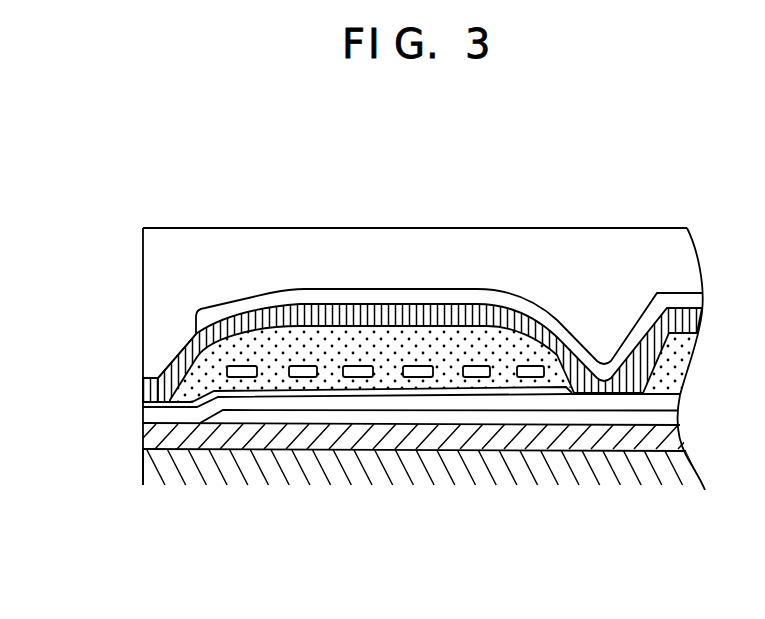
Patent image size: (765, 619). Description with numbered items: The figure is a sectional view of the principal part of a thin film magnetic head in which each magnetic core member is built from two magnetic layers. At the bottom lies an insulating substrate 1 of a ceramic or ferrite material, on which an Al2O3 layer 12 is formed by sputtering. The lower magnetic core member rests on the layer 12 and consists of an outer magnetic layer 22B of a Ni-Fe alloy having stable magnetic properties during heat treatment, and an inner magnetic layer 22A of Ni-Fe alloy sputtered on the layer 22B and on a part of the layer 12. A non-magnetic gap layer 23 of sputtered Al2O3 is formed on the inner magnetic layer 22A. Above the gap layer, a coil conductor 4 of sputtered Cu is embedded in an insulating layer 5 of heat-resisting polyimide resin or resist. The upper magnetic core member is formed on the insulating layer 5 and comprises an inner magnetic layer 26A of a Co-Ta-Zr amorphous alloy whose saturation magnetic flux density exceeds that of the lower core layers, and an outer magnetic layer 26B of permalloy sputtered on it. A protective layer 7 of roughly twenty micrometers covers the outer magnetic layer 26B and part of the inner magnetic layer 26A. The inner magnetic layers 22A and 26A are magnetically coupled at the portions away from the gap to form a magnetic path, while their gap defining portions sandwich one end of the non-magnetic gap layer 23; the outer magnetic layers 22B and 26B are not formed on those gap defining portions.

The insulating substrate 1 is at (197, 468).
The coil conductor 4 is at (480, 365).
The insulating layer 5 is at (330, 342).
The protective layer 7 is at (506, 259).
The Al2O3 layer 12 is at (158, 437).
The inner magnetic layer of the lower magnetic core member 22A is at (157, 413).
The outer magnetic layer of the lower magnetic core member 22B is at (363, 413).
The non-magnetic gap layer 23 is at (145, 403).
The inner magnetic layer of the upper magnetic core member 26A is at (194, 359).
The outer magnetic layer of the upper magnetic core member 26B is at (408, 298).